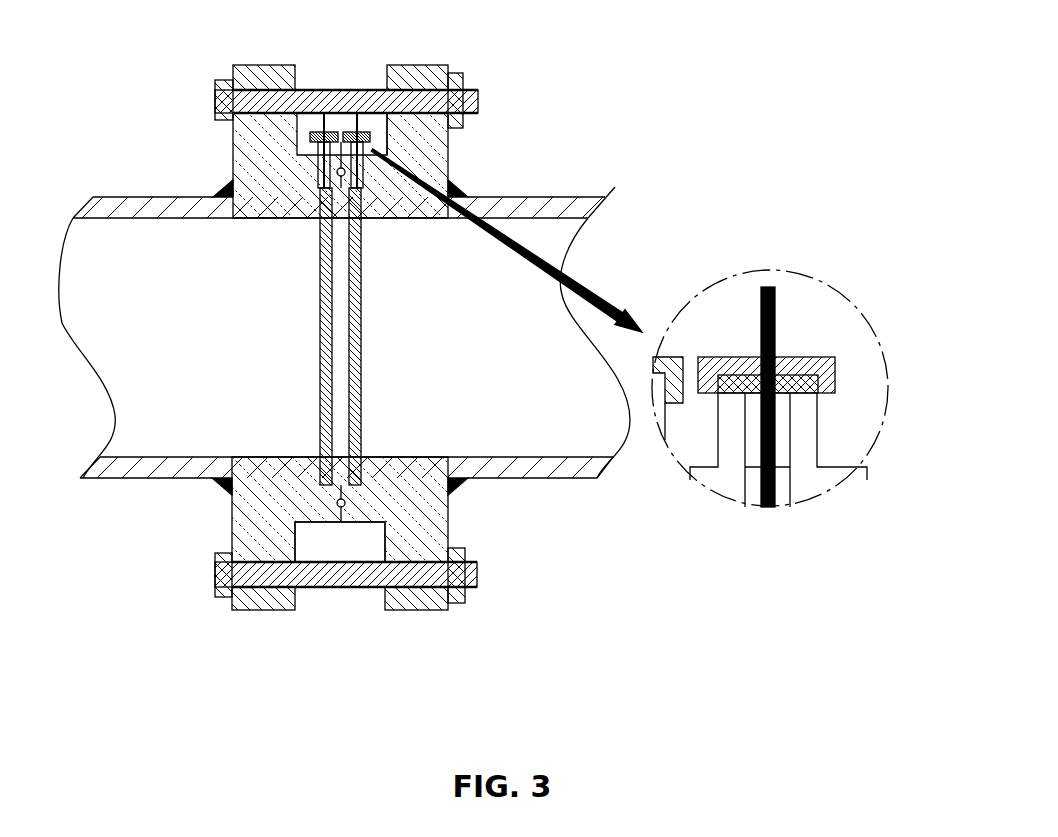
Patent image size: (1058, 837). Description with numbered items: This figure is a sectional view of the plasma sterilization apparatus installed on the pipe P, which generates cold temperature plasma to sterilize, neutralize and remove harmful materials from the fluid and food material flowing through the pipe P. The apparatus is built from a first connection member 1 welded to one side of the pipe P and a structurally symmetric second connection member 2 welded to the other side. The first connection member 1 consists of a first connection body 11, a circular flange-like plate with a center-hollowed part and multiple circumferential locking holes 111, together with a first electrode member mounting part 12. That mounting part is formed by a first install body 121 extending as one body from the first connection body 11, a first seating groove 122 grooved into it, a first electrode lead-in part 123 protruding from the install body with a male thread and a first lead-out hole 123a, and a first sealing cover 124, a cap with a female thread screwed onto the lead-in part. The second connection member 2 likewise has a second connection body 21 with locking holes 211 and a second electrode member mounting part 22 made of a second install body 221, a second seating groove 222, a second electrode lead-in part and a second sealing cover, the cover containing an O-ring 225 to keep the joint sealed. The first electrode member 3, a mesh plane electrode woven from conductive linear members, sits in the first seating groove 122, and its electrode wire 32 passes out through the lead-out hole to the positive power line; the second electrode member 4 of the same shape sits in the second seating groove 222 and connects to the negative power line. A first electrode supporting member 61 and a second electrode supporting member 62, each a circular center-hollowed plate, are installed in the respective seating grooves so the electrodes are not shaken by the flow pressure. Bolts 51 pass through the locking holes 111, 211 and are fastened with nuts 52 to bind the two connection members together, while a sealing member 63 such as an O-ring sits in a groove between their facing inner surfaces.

The first connection member 1 is at (78, 33).
The first connection body 11 is at (240, 85).
The locking holes 111 is at (220, 84).
The first electrode member mounting part 12 is at (132, 82).
The first install body 121 is at (240, 160).
The first seating groove 122 is at (230, 183).
The first electrode lead-in part 123 is at (312, 150).
The first lead-out hole 123a is at (325, 122).
The first sealing cover 124 is at (312, 134).
The second connection member 2 is at (604, 33).
The second connection body 21 is at (444, 66).
The locking holes 211 is at (455, 90).
The second electrode member mounting part 22 is at (550, 82).
The second install body 221 is at (452, 160).
The second seating groove 222 is at (458, 183).
The O-ring 225 is at (835, 378).
The first electrode member 3 is at (310, 320).
The electrode wire 32 is at (776, 306).
The second electrode member 4 is at (370, 320).
The bolts 51 is at (218, 600).
The nuts 52 is at (458, 605).
The first electrode supporting member 61 is at (300, 523).
The second electrode supporting member 62 is at (368, 530).
The sealing member 63 is at (340, 508).
The pipe P is at (98, 478).